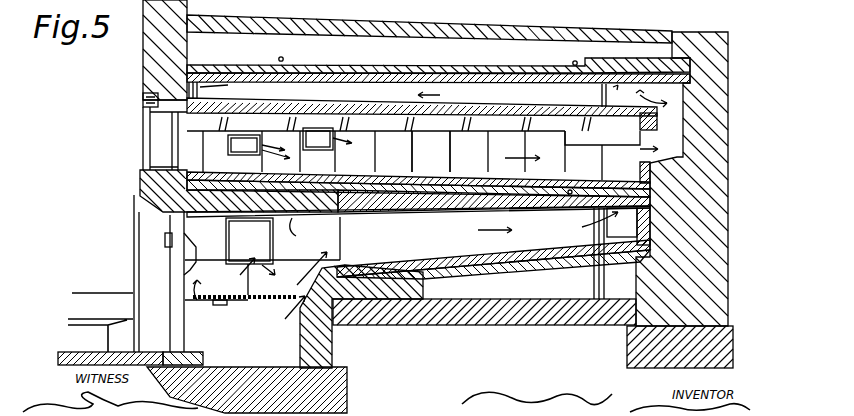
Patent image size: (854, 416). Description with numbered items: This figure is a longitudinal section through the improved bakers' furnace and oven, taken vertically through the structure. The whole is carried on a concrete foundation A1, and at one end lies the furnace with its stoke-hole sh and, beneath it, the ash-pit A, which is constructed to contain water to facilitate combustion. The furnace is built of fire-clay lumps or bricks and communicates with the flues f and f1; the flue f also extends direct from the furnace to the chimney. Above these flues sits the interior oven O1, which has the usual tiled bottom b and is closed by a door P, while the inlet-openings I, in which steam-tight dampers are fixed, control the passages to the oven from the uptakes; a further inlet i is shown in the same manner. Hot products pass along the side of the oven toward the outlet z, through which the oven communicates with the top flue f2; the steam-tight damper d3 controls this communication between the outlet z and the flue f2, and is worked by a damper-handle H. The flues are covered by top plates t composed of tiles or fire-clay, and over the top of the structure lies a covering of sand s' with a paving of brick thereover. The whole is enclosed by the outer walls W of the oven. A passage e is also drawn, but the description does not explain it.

The outer wall W is at (143, 55).
The damper-handle H is at (143, 96).
The door P is at (143, 170).
The stoke-hole sh is at (100, 323).
The covering of sand s' is at (429, 38).
The top plate t is at (375, 146).
The flue f2 is at (438, 80).
The steam-tight damper d3 is at (688, 108).
The outlet z is at (635, 161).
The tiled bottom b is at (384, 153).
The interior oven O1 is at (431, 152).
The inlet-opening i is at (290, 143).
The flue f is at (250, 246).
The flue f1 is at (473, 246).
The inlet-opening I is at (245, 284).
The ash-pit A is at (275, 338).
The air passage e is at (557, 253).
The concrete foundation A1 is at (480, 322).